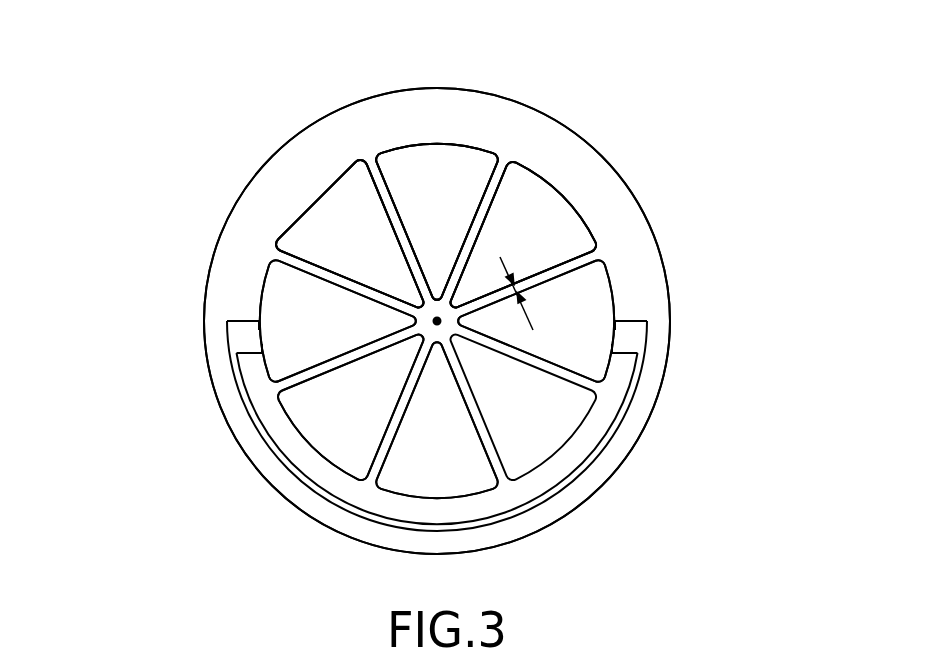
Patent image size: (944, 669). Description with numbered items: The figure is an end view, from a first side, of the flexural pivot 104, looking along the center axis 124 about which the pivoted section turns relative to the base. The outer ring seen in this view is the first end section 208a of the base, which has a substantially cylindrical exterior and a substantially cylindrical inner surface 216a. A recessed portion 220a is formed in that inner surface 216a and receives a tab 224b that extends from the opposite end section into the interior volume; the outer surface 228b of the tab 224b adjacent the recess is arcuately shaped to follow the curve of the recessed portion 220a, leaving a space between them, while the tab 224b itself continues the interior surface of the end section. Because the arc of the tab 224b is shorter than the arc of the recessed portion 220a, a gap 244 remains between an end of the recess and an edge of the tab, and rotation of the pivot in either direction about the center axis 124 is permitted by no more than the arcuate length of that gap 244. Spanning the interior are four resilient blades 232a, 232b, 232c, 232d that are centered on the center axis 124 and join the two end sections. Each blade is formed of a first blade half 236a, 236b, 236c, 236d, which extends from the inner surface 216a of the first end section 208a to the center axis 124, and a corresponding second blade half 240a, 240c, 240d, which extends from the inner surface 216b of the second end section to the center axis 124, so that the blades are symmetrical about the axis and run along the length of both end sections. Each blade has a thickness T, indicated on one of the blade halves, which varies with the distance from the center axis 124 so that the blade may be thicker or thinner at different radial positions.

The flexural pivot 104 is at (537, 108).
The first end section 208a is at (657, 238).
The center axis 124 is at (437, 321).
The inner surface 216a is at (303, 207).
The inner surface 216b is at (453, 500).
The recessed portion 220a is at (233, 320).
The tab 224b is at (566, 446).
The outer surface 228b is at (568, 482).
The blade 232a is at (283, 277).
The blade 232b is at (420, 232).
The blade 232c is at (490, 205).
The blade 232d is at (370, 402).
The first blade half 236a is at (317, 273).
The first blade half 236b is at (390, 200).
The first blade half 236c is at (490, 185).
The first blade half 236d is at (570, 258).
The second blade half 240a is at (553, 367).
The second blade half 240c is at (383, 497).
The second blade half 240d is at (313, 363).
The gap 244 is at (632, 338).
The thickness T is at (500, 257).